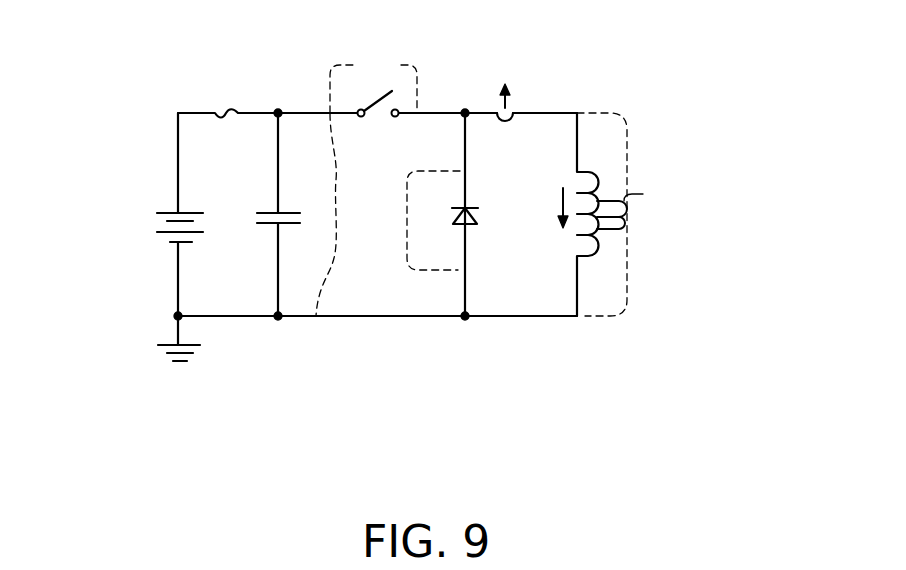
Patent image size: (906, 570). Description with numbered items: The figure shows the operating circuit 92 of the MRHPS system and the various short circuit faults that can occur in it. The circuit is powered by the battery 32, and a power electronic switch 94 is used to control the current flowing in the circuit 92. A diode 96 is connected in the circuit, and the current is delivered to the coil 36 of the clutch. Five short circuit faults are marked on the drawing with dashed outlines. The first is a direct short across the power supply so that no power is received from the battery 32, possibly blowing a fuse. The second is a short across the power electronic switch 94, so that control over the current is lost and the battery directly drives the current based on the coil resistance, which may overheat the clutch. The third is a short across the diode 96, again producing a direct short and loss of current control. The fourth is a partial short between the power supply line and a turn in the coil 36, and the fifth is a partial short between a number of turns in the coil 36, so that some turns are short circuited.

The battery 32 is at (140, 216).
The power electronic switch 94 is at (358, 100).
The diode 96 is at (486, 218).
The coil 36 is at (600, 228).
The operating circuit 92 is at (383, 232).